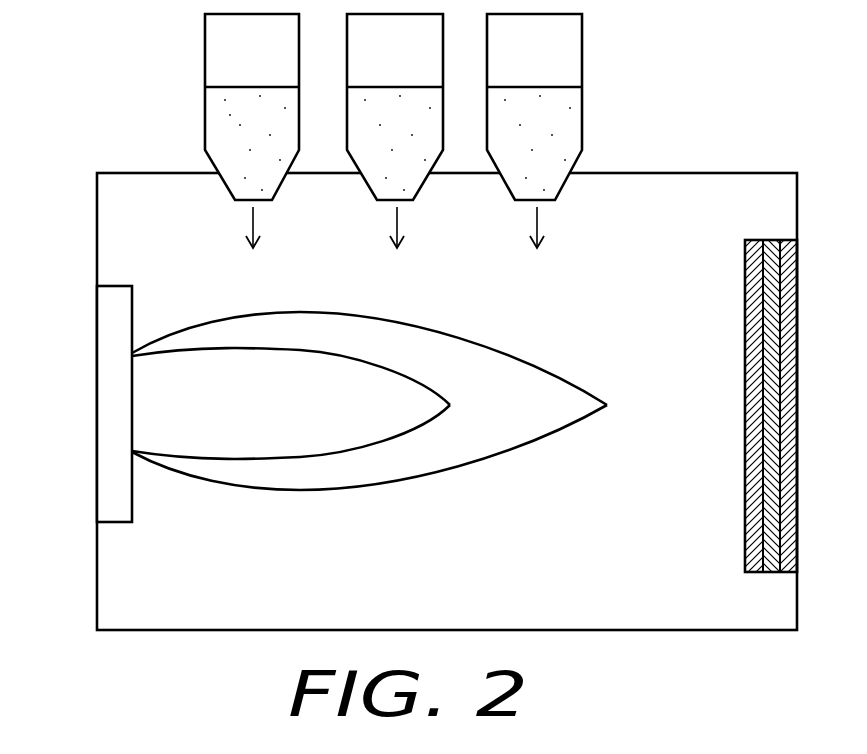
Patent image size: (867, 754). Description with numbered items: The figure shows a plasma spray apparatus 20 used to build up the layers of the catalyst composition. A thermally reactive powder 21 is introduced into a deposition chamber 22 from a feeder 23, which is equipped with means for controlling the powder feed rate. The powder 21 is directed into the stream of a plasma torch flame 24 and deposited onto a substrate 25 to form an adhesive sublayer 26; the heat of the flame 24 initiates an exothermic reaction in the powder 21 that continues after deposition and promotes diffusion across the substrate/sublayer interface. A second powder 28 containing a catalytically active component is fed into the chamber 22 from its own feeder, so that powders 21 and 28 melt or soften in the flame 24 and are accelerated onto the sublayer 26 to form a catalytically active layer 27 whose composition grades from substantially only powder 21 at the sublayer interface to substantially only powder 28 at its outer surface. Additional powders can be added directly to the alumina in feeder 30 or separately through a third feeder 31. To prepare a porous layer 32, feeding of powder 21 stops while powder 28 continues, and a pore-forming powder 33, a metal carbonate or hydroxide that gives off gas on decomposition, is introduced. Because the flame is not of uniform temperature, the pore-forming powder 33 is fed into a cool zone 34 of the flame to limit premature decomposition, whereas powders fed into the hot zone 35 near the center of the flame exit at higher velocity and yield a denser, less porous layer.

The plasma spray apparatus 20 is at (76, 303).
The thermally reactive powder 21 is at (235, 108).
The deposition chamber 22 is at (152, 223).
The feeder 23 is at (227, 131).
The plasma torch flame 24 is at (207, 484).
The substrate 25 is at (770, 431).
The sublayer 26 is at (783, 578).
The catalytically active layer 27 is at (767, 576).
The second powder 28 is at (378, 108).
The feeder 30 is at (377, 131).
The third feeder 31 is at (517, 131).
The porous layer 32 is at (746, 576).
The pore-forming powder 33 is at (520, 108).
The cool zone 34 is at (369, 414).
The hot zone 35 is at (382, 417).